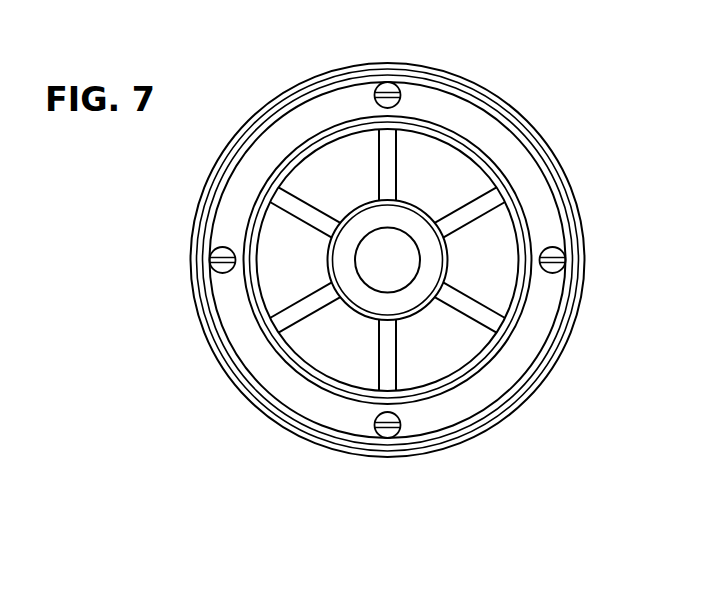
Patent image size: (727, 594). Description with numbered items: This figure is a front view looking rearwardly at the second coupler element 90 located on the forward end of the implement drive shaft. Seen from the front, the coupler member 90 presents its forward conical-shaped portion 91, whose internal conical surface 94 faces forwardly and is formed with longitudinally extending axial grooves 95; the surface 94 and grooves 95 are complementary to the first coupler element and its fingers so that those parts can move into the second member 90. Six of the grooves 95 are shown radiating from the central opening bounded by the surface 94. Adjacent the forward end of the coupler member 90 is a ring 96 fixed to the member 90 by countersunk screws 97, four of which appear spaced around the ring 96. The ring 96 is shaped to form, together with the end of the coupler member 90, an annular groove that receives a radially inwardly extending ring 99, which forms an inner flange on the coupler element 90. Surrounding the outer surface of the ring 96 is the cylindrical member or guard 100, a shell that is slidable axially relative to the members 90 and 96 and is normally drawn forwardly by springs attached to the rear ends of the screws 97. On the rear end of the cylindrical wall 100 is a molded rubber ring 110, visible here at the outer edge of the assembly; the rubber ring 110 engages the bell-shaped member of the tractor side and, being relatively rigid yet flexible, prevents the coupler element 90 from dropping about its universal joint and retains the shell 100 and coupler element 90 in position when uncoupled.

The second coupler element 90 is at (566, 152).
The forward conical-shaped portion 91 is at (449, 164).
The internal conical surface 94 is at (442, 353).
The axial grooves 95 is at (472, 211).
The ring 96 is at (549, 209).
The countersunk screws 97 is at (393, 86).
The radially inwardly extending ring 99 is at (338, 131).
The cylindrical member or guard 100 is at (342, 80).
The molded rubber ring 110 is at (425, 457).